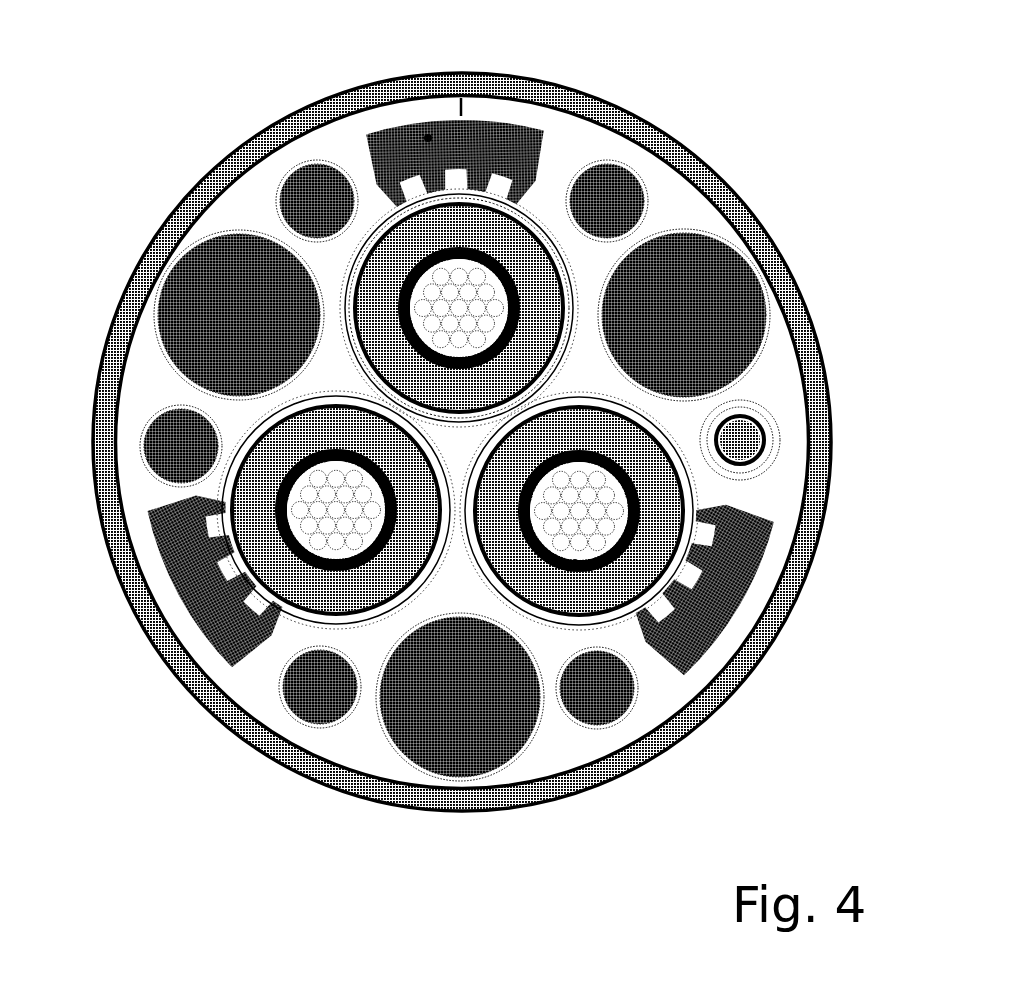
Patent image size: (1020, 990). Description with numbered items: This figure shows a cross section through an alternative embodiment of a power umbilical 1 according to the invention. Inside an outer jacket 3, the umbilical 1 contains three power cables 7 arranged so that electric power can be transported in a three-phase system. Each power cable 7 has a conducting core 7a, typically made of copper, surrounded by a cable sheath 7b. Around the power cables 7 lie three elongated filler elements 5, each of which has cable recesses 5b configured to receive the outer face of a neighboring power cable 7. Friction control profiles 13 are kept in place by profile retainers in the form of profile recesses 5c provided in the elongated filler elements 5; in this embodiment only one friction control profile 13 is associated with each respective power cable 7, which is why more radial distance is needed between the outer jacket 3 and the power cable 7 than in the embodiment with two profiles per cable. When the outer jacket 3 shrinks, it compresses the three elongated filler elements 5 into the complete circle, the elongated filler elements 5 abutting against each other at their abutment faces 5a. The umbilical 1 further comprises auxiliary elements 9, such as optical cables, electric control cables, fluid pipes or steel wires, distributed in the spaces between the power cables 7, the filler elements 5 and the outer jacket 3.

The umbilical 1 is at (213, 103).
The outer jacket 3 is at (400, 792).
The elongated filler element 5 is at (247, 212).
The abutment face 5a is at (740, 608).
The cable recess 5b is at (418, 223).
The profile recess 5c is at (195, 631).
The power cable 7 is at (553, 423).
The conducting core 7a is at (672, 587).
The cable sheath 7b is at (608, 612).
The auxiliary element 9 is at (612, 193).
The friction control profile 13 is at (480, 142).